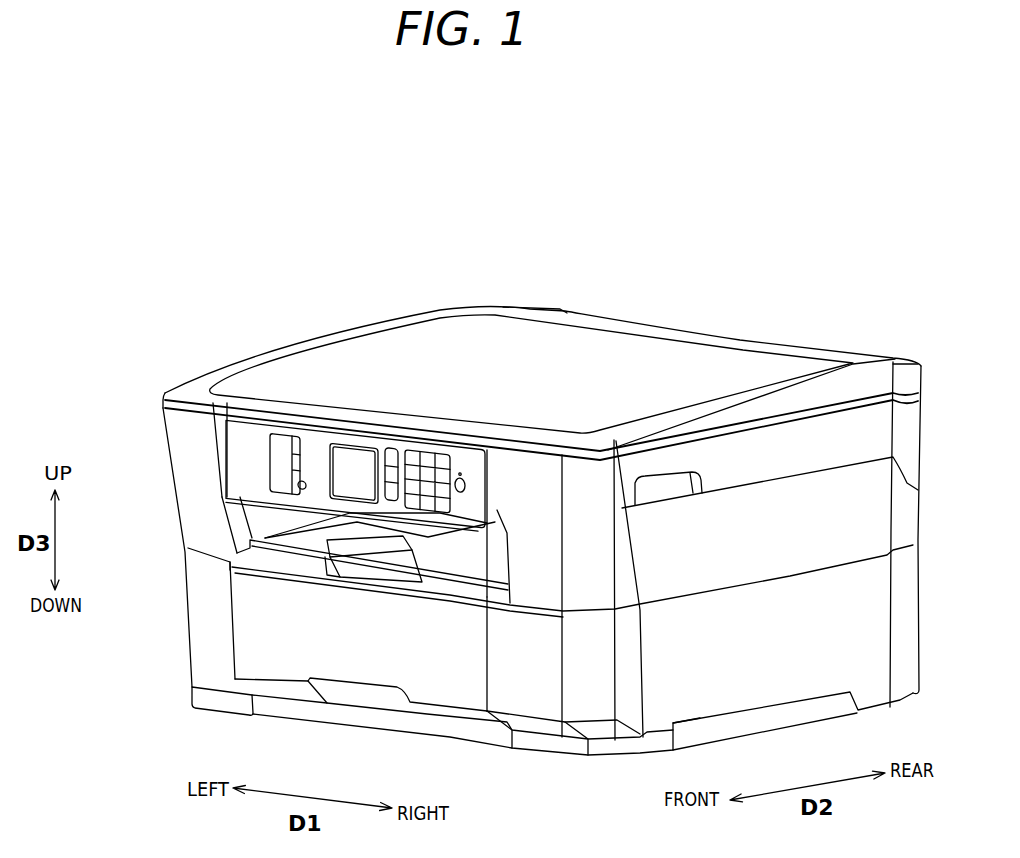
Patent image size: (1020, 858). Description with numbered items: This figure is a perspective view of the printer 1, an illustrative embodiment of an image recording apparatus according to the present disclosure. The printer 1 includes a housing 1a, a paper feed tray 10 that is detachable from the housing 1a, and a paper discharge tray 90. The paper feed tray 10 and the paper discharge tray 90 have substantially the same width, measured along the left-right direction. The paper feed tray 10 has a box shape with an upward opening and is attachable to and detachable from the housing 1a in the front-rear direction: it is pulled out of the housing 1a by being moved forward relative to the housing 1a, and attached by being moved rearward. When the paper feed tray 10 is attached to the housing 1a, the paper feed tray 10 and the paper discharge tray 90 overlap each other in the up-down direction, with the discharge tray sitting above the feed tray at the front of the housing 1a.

The printer 1 is at (240, 163).
The housing 1a is at (180, 474).
The paper discharge tray 90 is at (247, 556).
The paper feed tray 10 is at (262, 624).